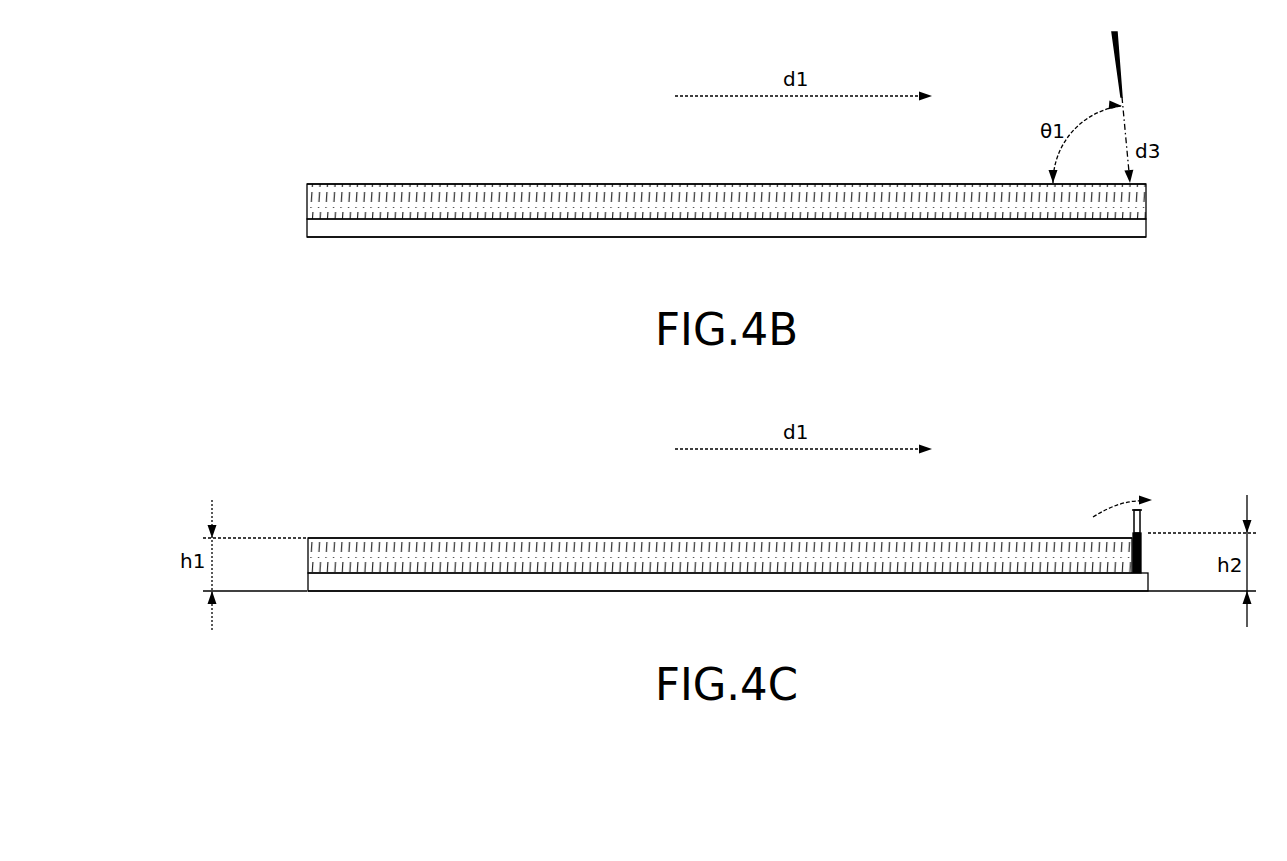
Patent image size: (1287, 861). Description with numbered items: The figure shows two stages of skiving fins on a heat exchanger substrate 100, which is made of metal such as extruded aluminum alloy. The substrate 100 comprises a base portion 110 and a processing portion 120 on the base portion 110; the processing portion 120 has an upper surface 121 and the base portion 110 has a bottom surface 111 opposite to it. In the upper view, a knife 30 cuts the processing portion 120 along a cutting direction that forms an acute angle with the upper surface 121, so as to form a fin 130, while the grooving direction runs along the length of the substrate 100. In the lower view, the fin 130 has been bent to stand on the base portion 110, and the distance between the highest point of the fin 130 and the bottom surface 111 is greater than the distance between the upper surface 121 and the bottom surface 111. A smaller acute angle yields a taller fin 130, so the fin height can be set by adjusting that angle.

In FIG. 4B, the knife 30 is at (1123, 56).
In FIG. 4C, the knife 30 is at (1142, 519).
In FIG. 4B, the substrate 100 is at (777, 231).
In FIG. 4C, the substrate 100 is at (742, 585).
In FIG. 4B, the base portion 110 is at (762, 250).
In FIG. 4C, the base portion 110 is at (753, 603).
In FIG. 4B, the bottom surface 111 is at (868, 238).
In FIG. 4C, the bottom surface 111 is at (868, 592).
In FIG. 4B, the processing portion 120 is at (762, 182).
In FIG. 4C, the processing portion 120 is at (685, 535).
In FIG. 4B, the upper surface 121 is at (983, 183).
In FIG. 4C, the upper surface 121 is at (983, 537).
In FIG. 4C, the fin 130 is at (1142, 548).